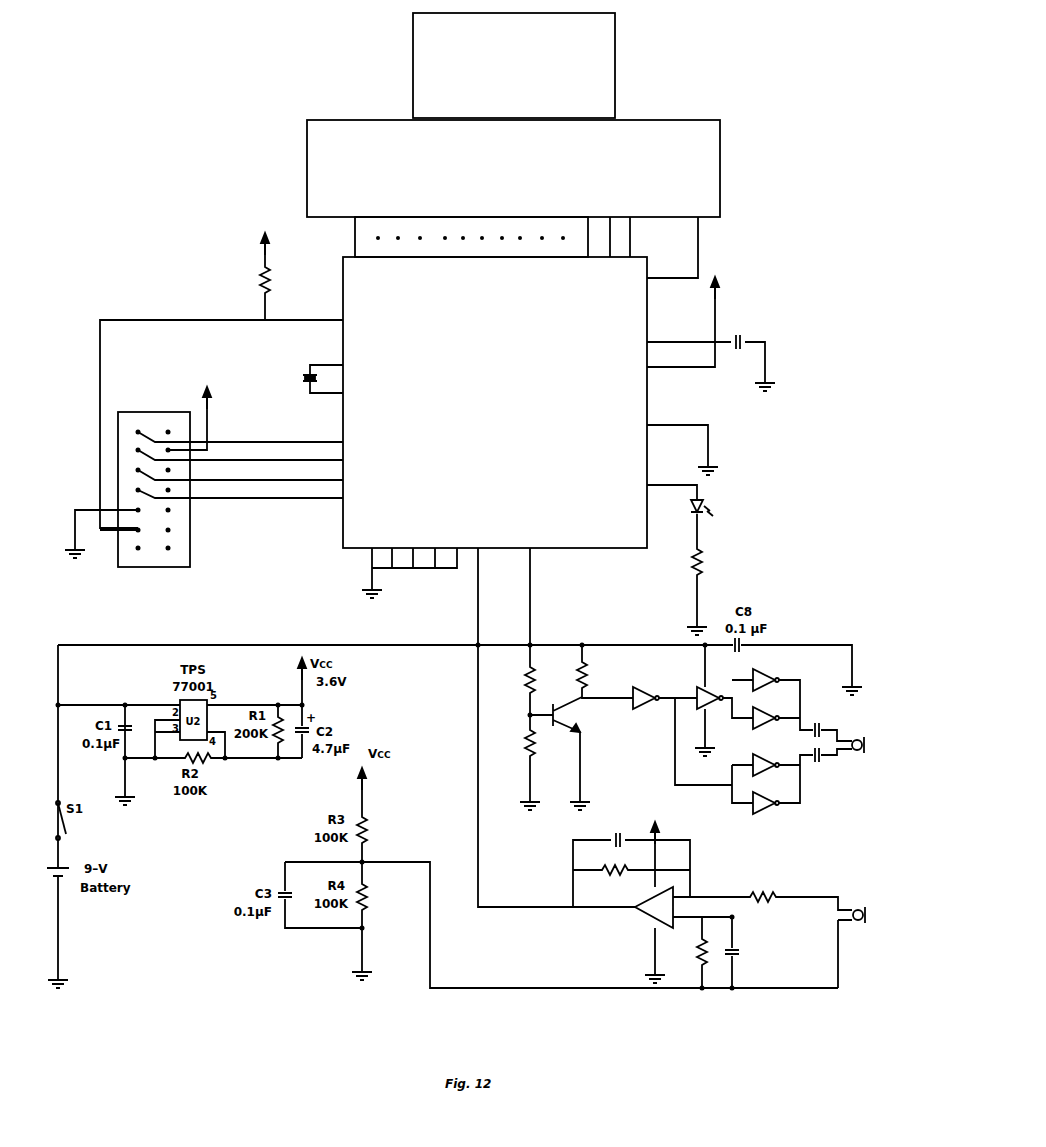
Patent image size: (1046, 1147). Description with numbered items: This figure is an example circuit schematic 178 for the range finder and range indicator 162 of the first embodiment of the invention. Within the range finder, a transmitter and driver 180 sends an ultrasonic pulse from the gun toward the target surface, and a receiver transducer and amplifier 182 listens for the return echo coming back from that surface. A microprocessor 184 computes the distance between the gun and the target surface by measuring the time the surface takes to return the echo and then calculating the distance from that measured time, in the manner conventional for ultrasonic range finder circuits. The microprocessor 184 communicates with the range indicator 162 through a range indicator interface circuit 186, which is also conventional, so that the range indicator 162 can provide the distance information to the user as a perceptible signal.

The range indicator 162 is at (514, 67).
The range indicator interface circuit 186 is at (722, 182).
The circuit schematic 178 is at (782, 455).
The transmitter and driver 180 is at (808, 637).
The receiver transducer and amplifier 182 is at (818, 885).
The microprocessor 184 is at (323, 557).